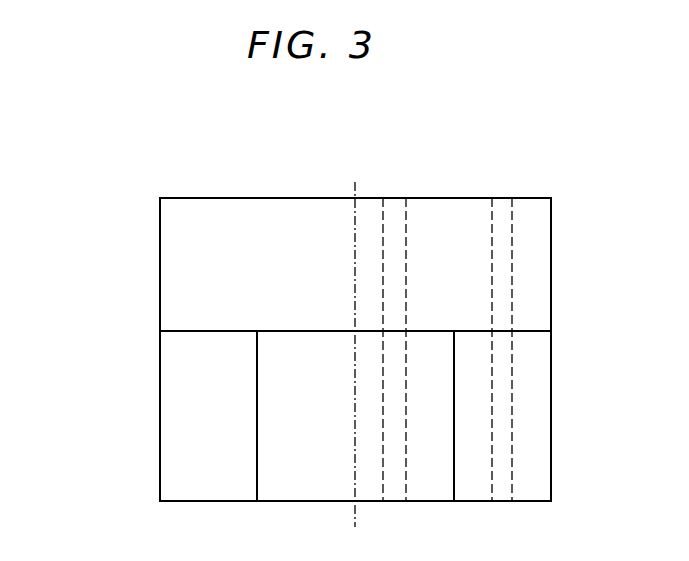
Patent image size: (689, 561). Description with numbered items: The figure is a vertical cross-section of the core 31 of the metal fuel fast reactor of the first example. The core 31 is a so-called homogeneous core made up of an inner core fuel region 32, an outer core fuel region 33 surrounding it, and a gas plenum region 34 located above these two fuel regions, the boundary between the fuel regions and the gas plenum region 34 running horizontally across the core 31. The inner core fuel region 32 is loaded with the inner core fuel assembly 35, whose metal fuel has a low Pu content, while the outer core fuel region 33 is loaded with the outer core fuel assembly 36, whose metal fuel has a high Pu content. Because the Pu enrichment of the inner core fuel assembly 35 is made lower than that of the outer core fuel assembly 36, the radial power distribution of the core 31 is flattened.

The core 31 is at (310, 187).
The inner core fuel region 32 is at (315, 357).
The outer core fuel region 33 is at (180, 415).
The gas plenum region 34 is at (207, 233).
The inner core fuel assembly 35 is at (400, 197).
The outer core fuel assembly 36 is at (500, 197).